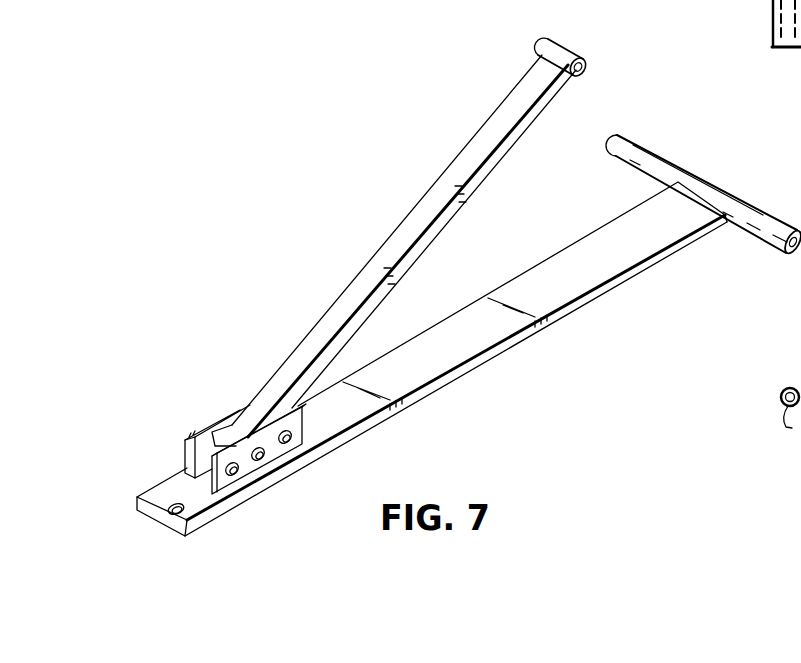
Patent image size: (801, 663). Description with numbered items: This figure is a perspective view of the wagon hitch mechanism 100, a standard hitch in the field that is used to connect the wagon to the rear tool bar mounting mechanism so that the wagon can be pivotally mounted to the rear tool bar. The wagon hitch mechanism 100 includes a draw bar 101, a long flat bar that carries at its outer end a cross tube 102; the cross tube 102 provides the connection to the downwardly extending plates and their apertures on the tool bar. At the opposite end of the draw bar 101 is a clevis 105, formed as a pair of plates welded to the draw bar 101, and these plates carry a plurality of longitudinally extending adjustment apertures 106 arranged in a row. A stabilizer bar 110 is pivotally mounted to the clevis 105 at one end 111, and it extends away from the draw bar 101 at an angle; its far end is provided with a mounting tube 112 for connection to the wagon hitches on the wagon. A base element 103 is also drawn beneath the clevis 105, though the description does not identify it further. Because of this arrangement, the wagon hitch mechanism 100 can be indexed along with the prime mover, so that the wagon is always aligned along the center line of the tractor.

The wagon hitch mechanism 100 is at (410, 168).
The draw bar 101 is at (546, 262).
The cross tube 102 is at (619, 148).
The base plate 103 is at (188, 498).
The clevis 105 is at (293, 456).
The adjustment apertures 106 is at (252, 470).
The stabilizer bar 110 is at (479, 130).
The end 111 is at (213, 430).
The mounting tube 112 is at (582, 57).